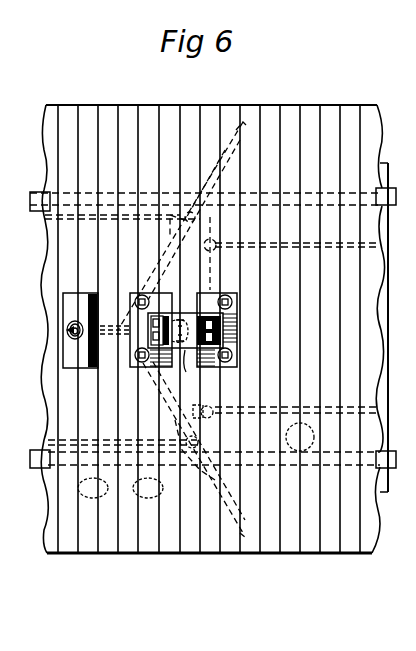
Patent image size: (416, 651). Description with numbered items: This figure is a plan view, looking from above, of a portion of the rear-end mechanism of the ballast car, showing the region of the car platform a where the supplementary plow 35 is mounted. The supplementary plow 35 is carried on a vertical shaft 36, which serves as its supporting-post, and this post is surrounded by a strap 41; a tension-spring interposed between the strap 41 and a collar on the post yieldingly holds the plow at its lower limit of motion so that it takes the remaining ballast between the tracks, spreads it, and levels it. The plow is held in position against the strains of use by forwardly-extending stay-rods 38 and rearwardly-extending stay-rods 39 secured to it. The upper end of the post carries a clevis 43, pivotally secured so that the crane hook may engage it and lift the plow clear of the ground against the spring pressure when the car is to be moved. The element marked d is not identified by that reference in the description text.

The platform a is at (277, 545).
The bracket d is at (44, 468).
The supplementary plow 35 is at (162, 444).
The vertical shaft 36 is at (167, 346).
The forwardly-extending stay-rods 38 is at (110, 446).
The rearwardly-extending stay-rods 39 is at (308, 410).
The strap 41 is at (238, 333).
The clevis 43 is at (198, 364).